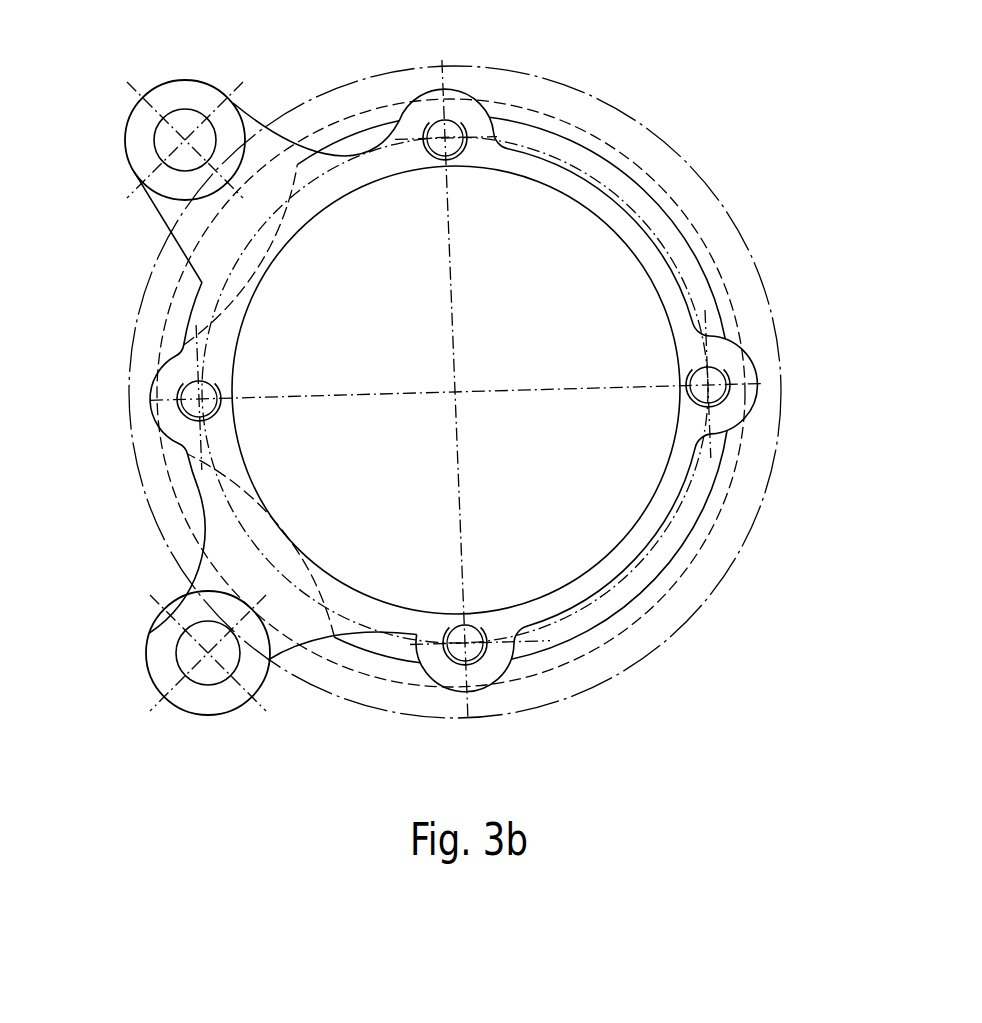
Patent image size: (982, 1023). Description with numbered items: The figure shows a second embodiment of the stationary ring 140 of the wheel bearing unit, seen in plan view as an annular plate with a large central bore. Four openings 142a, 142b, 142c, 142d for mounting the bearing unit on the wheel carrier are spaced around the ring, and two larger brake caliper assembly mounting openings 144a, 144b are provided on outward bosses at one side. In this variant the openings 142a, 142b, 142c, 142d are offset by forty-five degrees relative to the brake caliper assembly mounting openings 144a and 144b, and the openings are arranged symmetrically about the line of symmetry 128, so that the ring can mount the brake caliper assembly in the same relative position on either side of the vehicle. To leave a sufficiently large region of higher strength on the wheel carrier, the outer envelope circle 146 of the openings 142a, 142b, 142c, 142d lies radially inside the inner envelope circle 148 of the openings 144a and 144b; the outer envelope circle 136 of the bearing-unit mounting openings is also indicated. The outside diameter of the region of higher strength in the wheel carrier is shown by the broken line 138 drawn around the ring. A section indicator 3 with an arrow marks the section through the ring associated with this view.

The section line 3- 3 is at (633, 541).
The line of symmetry 128 is at (163, 402).
The outer envelope circle 136 is at (607, 623).
The broken line 138 is at (617, 148).
The stationary ring 140 is at (848, 307).
The mounting opening 142a is at (196, 393).
The mounting opening 142b is at (444, 136).
The mounting opening 142c is at (713, 393).
The mounting opening 142d is at (471, 647).
The brake caliper assembly mounting opening 144a is at (210, 667).
The brake caliper assembly mounting opening 144b is at (183, 141).
The outer envelope circle 146 is at (183, 318).
The inner envelope circle 148 is at (331, 695).